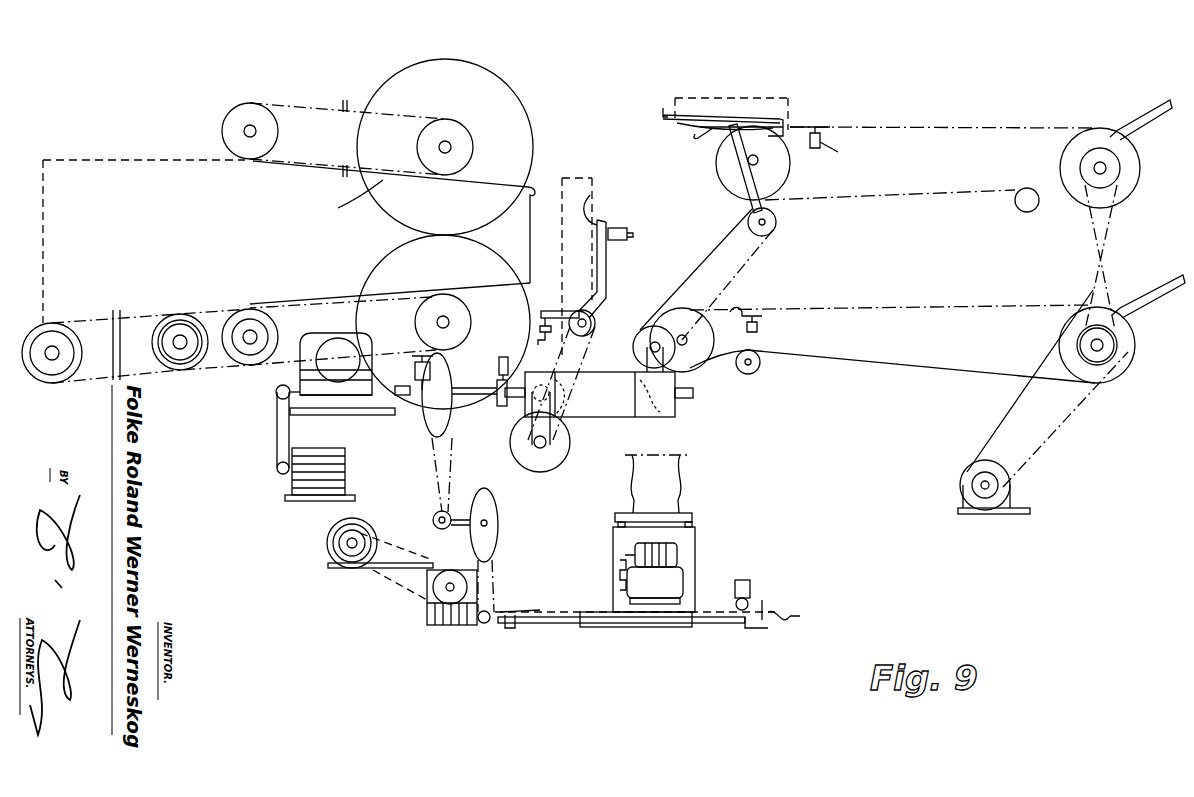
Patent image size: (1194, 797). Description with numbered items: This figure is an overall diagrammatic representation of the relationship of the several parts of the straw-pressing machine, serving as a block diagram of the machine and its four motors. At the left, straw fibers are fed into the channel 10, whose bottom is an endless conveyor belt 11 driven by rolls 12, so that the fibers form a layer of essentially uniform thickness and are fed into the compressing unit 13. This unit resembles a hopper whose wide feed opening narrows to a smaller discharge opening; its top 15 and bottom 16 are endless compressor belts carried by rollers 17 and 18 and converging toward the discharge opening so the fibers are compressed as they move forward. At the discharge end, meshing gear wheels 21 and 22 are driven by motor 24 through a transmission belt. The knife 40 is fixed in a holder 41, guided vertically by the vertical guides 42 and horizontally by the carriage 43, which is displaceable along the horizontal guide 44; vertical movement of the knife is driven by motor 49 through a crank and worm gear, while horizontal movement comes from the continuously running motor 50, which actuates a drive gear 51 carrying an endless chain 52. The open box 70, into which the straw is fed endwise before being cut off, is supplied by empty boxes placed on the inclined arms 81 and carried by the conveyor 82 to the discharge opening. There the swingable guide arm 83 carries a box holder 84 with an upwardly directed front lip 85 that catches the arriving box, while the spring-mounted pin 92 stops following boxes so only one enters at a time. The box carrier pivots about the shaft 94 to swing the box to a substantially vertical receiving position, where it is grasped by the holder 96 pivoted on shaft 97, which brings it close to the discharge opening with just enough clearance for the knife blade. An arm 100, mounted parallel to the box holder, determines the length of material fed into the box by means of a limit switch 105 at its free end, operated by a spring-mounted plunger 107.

The channel 10 is at (43, 226).
The endless conveyor belt 11 is at (100, 320).
The rolls 12 is at (58, 360).
The compressing unit 13 is at (528, 187).
The top compressor belt 15 is at (358, 206).
The bottom compressor belt 16 is at (315, 297).
The rollers 17 is at (248, 104).
The rollers 18 is at (240, 355).
The gear wheel 21 is at (455, 60).
The gear wheel 22 is at (477, 243).
The motor 24 is at (292, 497).
The knife 40 is at (665, 475).
The holder 41 is at (692, 518).
The vertical guides 42 is at (615, 524).
The carriage 43 is at (680, 627).
The horizontal guide 44 is at (575, 623).
The motor 49 is at (668, 583).
The motor 50 is at (348, 550).
The drive gear 51 is at (437, 625).
The endless chain 52 is at (540, 612).
The box 70 is at (580, 175).
The inclined arms 81 is at (1138, 112).
The conveyor 82 is at (988, 128).
The guide arm 83 is at (762, 182).
The box holder 84 is at (776, 120).
The front lip 85 is at (665, 108).
The pin 92 is at (828, 145).
The shaft 94 is at (776, 225).
The holder 96 is at (592, 276).
The shaft 97 is at (590, 335).
The arm 100 is at (606, 258).
The limit switch 105 is at (627, 228).
The plunger 107 is at (590, 195).